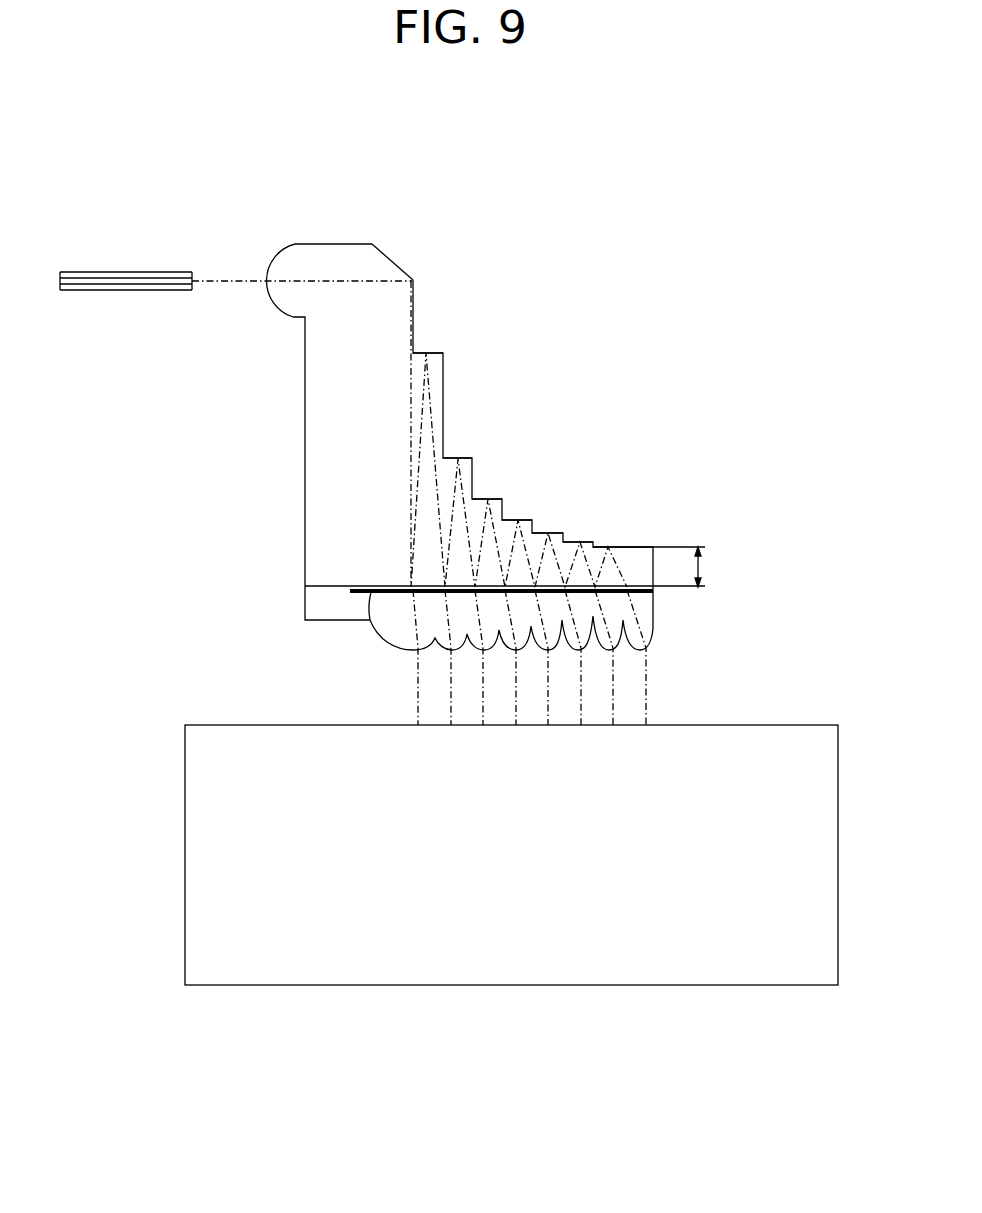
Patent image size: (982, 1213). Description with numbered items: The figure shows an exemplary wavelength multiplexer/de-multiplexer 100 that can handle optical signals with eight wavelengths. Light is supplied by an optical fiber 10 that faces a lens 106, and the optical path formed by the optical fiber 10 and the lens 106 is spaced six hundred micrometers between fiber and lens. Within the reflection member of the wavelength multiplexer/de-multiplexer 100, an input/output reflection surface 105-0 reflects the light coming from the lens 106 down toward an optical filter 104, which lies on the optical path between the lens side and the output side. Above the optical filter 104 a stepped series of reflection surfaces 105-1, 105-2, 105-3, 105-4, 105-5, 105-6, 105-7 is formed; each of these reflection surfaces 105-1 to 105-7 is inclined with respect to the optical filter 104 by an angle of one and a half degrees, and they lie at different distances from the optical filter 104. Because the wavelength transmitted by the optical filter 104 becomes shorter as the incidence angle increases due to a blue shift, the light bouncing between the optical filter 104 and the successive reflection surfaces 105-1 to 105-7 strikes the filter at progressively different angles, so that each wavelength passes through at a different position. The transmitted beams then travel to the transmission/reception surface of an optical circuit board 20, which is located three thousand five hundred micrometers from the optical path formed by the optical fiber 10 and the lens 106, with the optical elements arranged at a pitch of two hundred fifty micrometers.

The optical fiber 10 is at (110, 272).
The optical circuit board 20 is at (508, 968).
The wavelength multiplexer/de-multiplexer 100 is at (530, 288).
The optical filter 104 is at (370, 620).
The lens 106 is at (285, 262).
The input/output reflection surface 105-0 is at (390, 258).
The reflection surface 105-1 is at (433, 352).
The reflection surface 105-2 is at (462, 458).
The reflection surface 105-3 is at (488, 498).
The reflection surface 105-4 is at (518, 519).
The reflection surface 105-5 is at (548, 532).
The reflection surface 105-6 is at (580, 541).
The reflection surface 105-7 is at (643, 528).